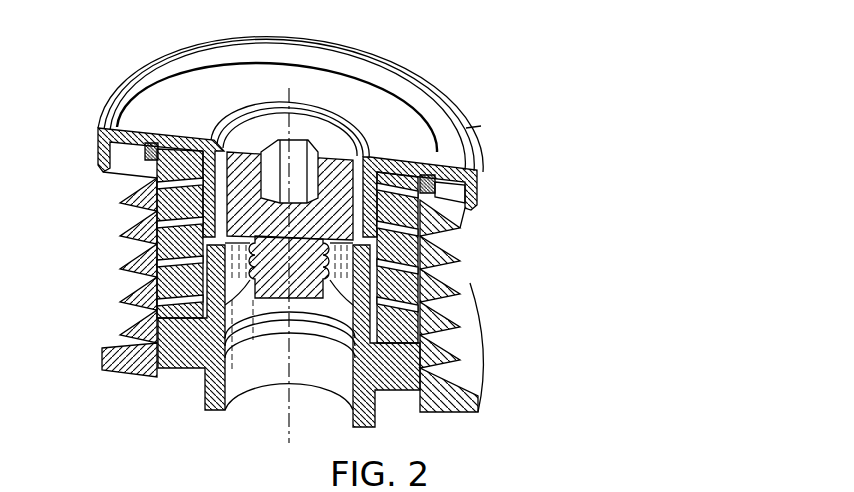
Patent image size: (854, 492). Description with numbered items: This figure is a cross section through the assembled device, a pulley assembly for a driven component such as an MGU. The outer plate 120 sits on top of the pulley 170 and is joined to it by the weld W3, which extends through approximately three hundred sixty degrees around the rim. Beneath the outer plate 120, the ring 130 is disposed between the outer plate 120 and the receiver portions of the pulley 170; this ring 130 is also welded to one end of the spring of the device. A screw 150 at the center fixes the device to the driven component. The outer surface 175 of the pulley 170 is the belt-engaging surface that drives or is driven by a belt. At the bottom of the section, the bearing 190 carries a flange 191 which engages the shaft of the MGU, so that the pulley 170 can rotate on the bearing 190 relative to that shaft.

The outer plate 120 is at (392, 88).
The ring 130 is at (437, 193).
The screw 150 is at (318, 135).
The pulley 170 is at (455, 290).
The outer surface 175 is at (123, 235).
The bearing 190 is at (378, 392).
The flange 191 is at (207, 408).
The weld W3 is at (465, 122).